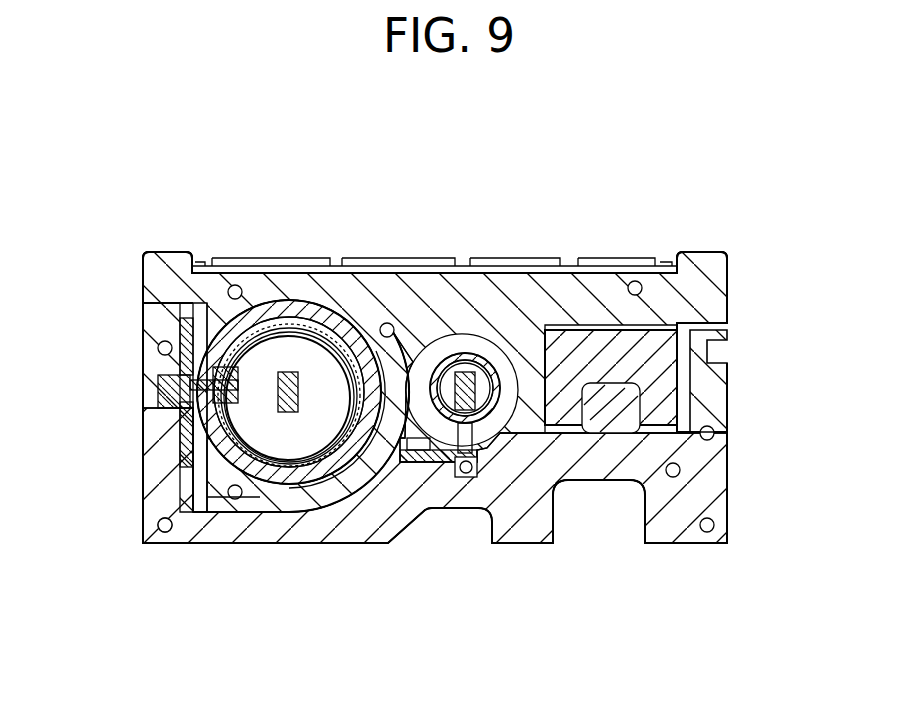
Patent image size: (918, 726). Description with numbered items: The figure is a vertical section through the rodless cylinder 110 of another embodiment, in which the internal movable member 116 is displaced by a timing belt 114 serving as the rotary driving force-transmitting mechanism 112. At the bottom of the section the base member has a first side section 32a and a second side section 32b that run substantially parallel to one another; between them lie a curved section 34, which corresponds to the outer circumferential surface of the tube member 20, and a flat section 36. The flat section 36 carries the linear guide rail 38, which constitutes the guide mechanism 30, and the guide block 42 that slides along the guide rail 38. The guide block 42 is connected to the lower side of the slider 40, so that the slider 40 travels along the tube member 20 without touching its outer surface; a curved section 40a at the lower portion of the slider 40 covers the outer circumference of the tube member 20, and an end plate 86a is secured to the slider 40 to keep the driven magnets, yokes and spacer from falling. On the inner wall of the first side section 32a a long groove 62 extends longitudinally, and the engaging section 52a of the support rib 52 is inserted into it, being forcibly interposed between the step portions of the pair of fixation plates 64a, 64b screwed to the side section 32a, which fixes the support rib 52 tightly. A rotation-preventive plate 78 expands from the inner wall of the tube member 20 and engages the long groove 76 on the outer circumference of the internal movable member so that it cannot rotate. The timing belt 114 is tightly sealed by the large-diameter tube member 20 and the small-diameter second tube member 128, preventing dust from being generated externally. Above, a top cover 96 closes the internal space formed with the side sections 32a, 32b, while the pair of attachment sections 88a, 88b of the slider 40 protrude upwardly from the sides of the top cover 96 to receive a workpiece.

The rodless cylinder 110 is at (818, 111).
The rotation-preventive plate 78 is at (228, 323).
The top cover 96 is at (352, 262).
The slider 40 is at (448, 317).
The attachment section 88a is at (167, 250).
The timing belt 114 is at (290, 370).
The end plate 86a is at (356, 328).
The attachment section 88b is at (700, 250).
The first side section 32a is at (143, 318).
The support rib 52 is at (183, 340).
The fixation plate 64a is at (158, 352).
The long groove 62 is at (160, 408).
The engaging section 52a is at (180, 413).
The fixation plate 64b is at (177, 450).
The guide block 42 is at (600, 326).
The guide mechanism 30 is at (677, 362).
The second side section 32b is at (708, 382).
The linear guide rail 38 is at (612, 402).
The long groove 76 is at (195, 547).
The rotary driving force-transmitting mechanism 112 is at (255, 465).
The curved section 40a is at (275, 500).
The tube member 20 is at (330, 457).
The internal movable member 116 is at (343, 473).
The curved section 34 is at (395, 515).
The second tube member 128 is at (505, 445).
The flat section 36 is at (652, 433).